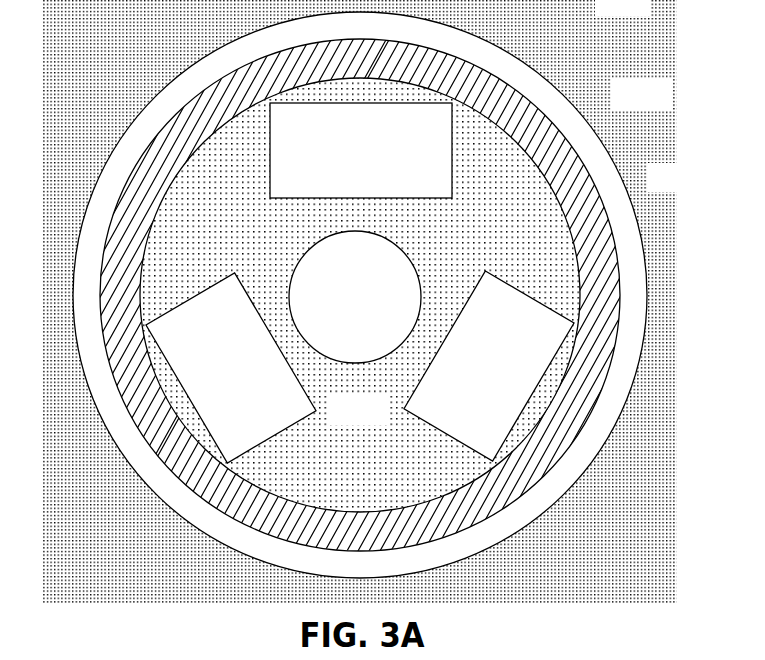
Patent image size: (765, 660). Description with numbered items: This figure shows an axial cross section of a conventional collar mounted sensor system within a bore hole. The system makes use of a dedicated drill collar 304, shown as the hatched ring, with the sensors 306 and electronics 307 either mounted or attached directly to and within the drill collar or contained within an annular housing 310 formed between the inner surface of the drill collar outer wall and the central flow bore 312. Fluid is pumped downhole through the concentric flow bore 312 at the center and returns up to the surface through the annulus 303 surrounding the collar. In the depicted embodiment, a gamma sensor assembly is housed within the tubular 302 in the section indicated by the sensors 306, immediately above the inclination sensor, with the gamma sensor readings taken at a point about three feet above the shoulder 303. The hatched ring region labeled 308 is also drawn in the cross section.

The tubular 302 is at (600, 9).
The annulus 303 is at (571, 117).
The drill collar 304 is at (607, 198).
The sensors 306 is at (360, 367).
The electronics 307 is at (361, 150).
The hatched ring / sleeve 308 is at (106, 246).
The annular housing 310 is at (380, 422).
The concentric flow bore 312 is at (330, 309).